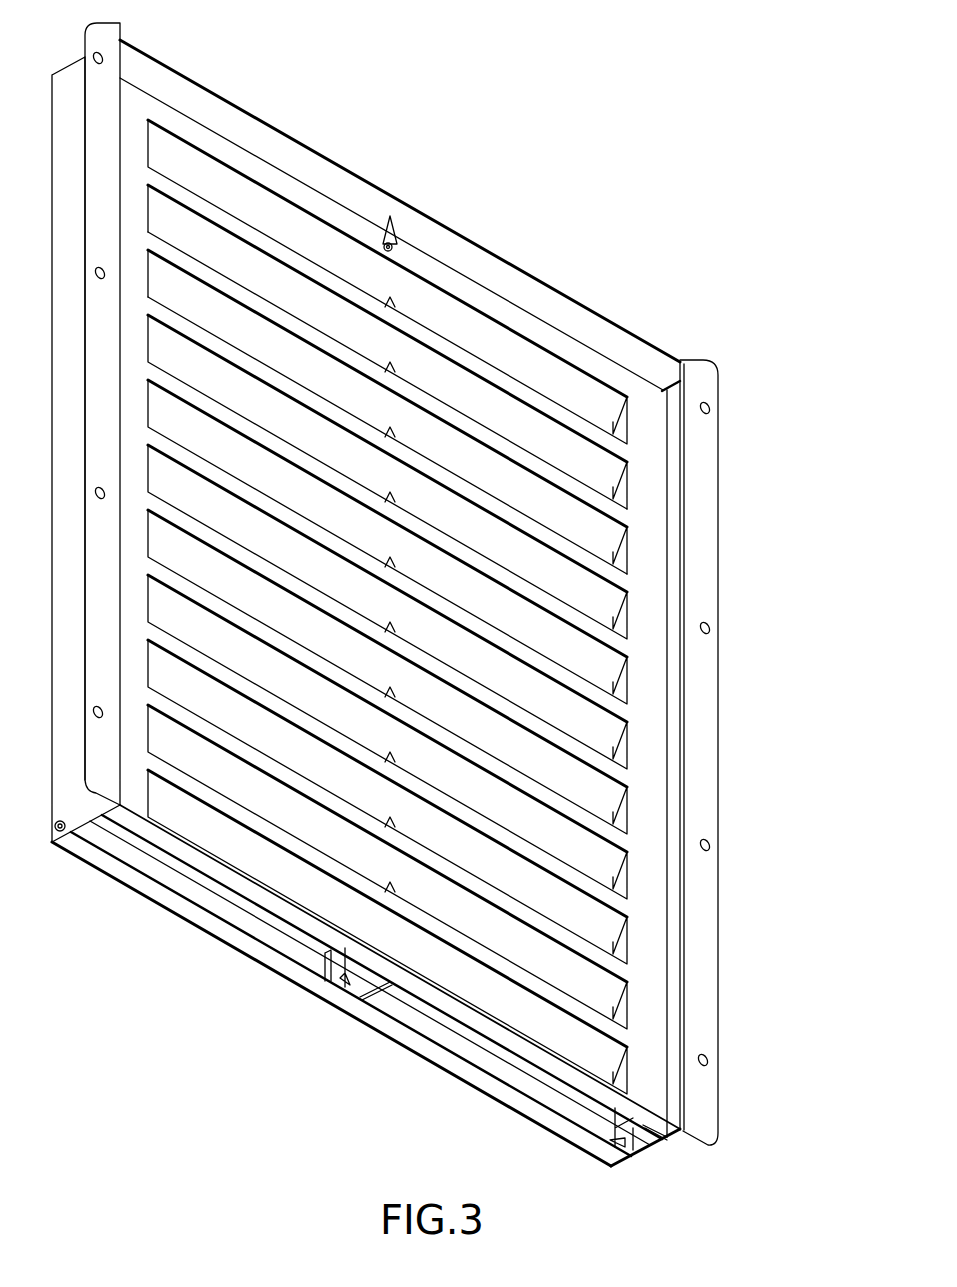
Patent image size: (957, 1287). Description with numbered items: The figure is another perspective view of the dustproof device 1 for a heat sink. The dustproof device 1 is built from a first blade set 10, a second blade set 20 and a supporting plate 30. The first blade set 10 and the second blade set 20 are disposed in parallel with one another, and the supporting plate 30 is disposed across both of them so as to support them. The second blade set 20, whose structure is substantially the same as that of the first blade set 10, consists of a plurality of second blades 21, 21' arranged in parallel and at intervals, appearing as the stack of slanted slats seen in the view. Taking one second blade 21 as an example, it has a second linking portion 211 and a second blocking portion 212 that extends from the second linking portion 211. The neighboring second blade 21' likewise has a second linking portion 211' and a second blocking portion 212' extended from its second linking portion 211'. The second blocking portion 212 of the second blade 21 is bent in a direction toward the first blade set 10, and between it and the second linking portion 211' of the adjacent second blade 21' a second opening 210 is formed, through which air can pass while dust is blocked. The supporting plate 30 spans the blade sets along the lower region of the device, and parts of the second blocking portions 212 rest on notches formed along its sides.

The dustproof device 1 is at (439, 46).
The first blade set 10 is at (232, 949).
The second blade set 20 is at (668, 718).
The second blade 21 is at (490, 366).
The second linking portion 211 is at (469, 347).
The second blocking portion 212 is at (469, 370).
The second opening 210 is at (625, 492).
The second blade 21' is at (493, 437).
The second linking portion 211' is at (472, 415).
The second blocking portion 212' is at (472, 461).
The supporting plate 30 is at (367, 980).